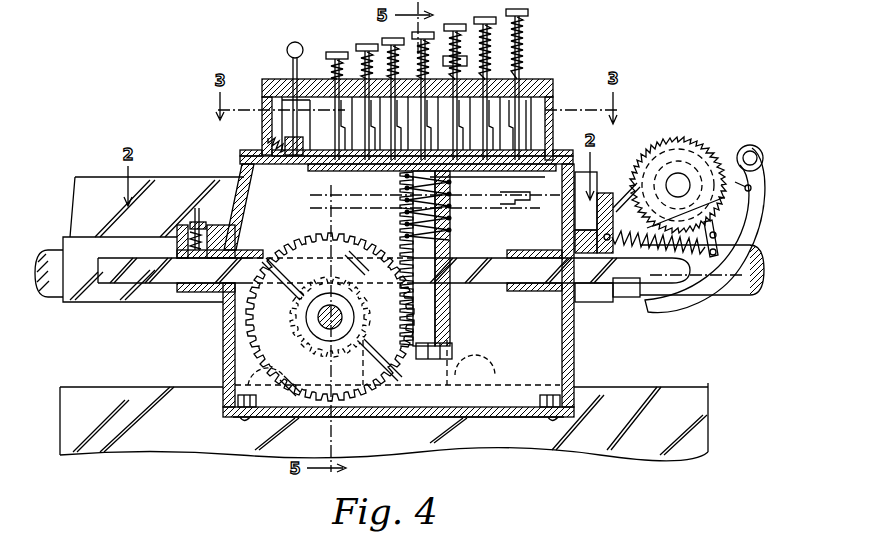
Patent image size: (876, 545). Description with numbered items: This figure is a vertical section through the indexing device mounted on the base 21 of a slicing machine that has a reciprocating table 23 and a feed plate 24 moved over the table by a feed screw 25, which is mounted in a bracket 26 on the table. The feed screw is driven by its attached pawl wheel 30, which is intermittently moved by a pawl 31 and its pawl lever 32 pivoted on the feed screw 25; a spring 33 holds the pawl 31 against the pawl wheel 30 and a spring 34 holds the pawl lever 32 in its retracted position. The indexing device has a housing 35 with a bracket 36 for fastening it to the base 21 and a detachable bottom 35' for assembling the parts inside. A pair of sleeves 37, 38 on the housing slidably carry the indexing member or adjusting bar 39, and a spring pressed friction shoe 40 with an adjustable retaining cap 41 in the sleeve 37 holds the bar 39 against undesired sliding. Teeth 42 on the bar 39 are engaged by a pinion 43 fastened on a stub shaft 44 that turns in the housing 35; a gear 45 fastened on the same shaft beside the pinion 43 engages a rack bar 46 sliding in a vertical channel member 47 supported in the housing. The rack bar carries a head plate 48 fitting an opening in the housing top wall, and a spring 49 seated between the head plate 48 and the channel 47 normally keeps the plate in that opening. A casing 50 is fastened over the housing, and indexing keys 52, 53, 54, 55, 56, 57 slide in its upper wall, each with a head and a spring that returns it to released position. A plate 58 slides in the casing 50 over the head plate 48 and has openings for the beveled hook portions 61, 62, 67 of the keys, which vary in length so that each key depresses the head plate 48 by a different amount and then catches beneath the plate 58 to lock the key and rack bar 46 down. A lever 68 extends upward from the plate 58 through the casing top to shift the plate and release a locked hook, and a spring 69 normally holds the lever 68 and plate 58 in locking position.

The base 21 is at (166, 440).
The reciprocating table 23 is at (70, 300).
The feed plate 24 is at (85, 200).
The feed screw 25 is at (674, 180).
The bracket 26 is at (624, 200).
The pawl wheel 30 is at (690, 140).
The pawl 31 is at (744, 148).
The pawl lever 32 is at (735, 226).
The spring 33 is at (752, 188).
The spring 34 is at (718, 246).
The housing 35 is at (353, 292).
The detachable bottom 35' is at (398, 450).
The bracket 36 is at (510, 376).
The sleeve 37 is at (196, 296).
The sleeve 38 is at (540, 292).
The adjusting bar 39 is at (132, 272).
The friction shoe 40 is at (180, 250).
The retaining cap 41 is at (190, 217).
The teeth 42 is at (238, 300).
The pinion 43 is at (302, 340).
The stub shaft 44 is at (352, 322).
The gear 45 is at (256, 362).
The rack bar 46 is at (442, 300).
The channel member 47 is at (452, 352).
The head plate 48 is at (512, 178).
The spring 49 is at (452, 220).
The casing 50 is at (553, 88).
The indexing key 52 is at (365, 48).
The indexing key 53 is at (391, 44).
The indexing key 54 is at (421, 38).
The indexing key 55 is at (451, 26).
The indexing key 56 is at (479, 23).
The indexing key 57 is at (521, 31).
The slidable plate 58 is at (526, 150).
The beveled hook portion 61 is at (335, 55).
The beveled hook portion 62 is at (371, 147).
The beveled hook portion 67 is at (513, 115).
The lever 68 is at (292, 64).
The spring 69 is at (268, 134).